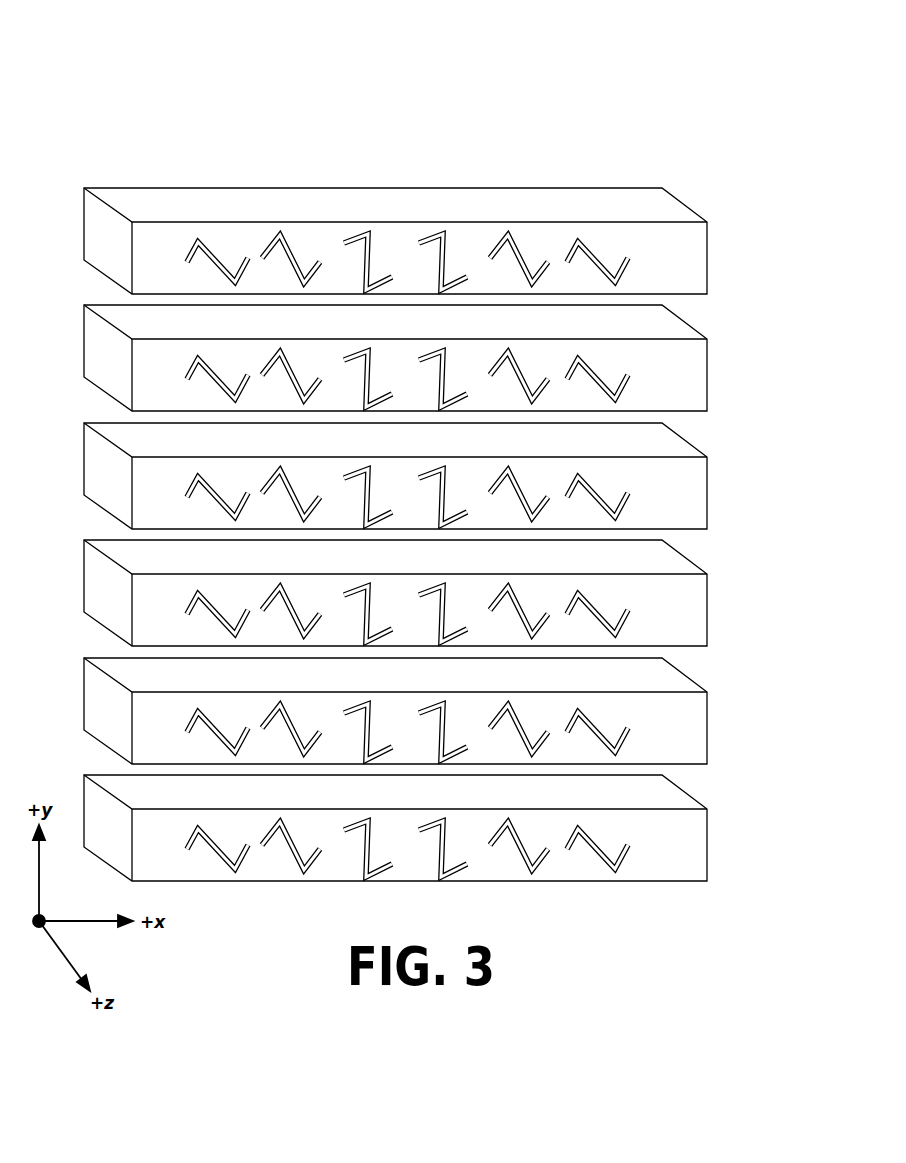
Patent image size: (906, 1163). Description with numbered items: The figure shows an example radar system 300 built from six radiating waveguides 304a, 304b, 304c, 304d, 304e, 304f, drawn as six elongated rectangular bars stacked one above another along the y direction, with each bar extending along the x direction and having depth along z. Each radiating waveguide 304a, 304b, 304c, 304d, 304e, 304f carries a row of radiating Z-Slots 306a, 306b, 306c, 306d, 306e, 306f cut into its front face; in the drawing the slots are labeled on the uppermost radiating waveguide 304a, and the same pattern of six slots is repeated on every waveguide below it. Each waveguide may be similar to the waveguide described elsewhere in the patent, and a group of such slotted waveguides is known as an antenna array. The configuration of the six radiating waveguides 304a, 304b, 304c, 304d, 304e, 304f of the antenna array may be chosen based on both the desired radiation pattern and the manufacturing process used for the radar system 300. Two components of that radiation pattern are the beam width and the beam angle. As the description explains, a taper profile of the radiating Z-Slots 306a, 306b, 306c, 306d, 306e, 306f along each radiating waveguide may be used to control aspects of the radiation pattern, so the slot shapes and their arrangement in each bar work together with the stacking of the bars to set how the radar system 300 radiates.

The radar system 300 is at (108, 70).
The radiating waveguide 304a is at (436, 226).
The radiating waveguide 304b is at (708, 377).
The radiating waveguide 304c is at (708, 494).
The radiating waveguide 304d is at (708, 613).
The radiating waveguide 304e is at (708, 728).
The radiating waveguide 304f is at (708, 840).
The radiating Z-Slot 306a is at (215, 247).
The radiating Z-Slot 306b is at (293, 245).
The radiating Z-Slot 306c is at (349, 238).
The radiating Z-Slot 306d is at (423, 238).
The radiating Z-Slot 306e is at (517, 248).
The radiating Z-Slot 306f is at (599, 250).